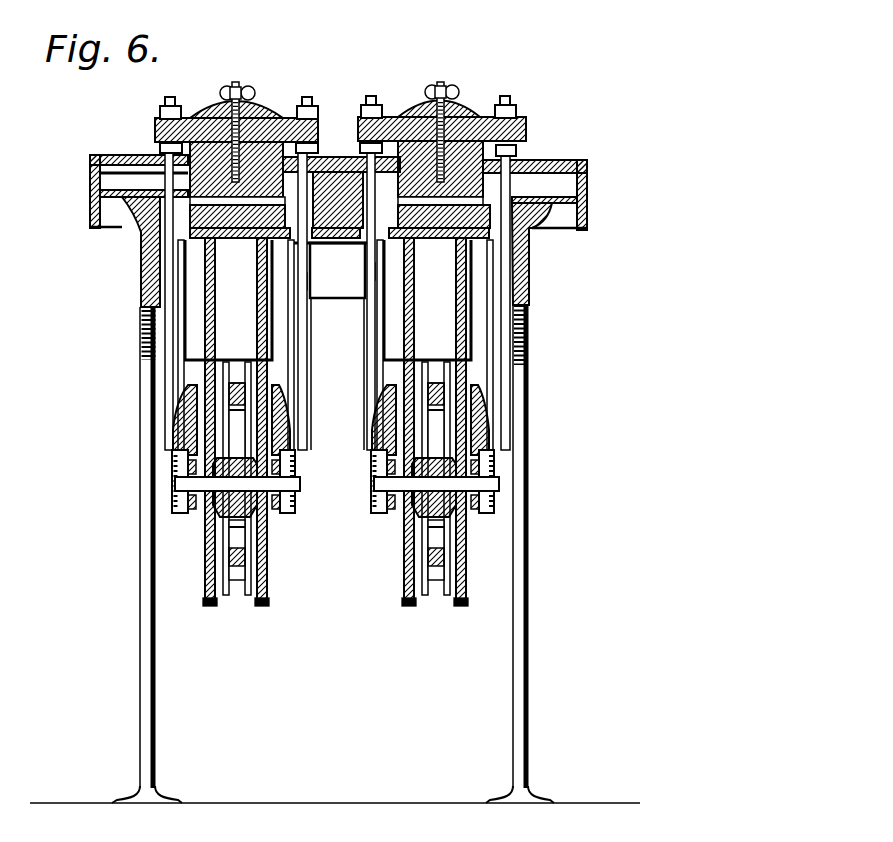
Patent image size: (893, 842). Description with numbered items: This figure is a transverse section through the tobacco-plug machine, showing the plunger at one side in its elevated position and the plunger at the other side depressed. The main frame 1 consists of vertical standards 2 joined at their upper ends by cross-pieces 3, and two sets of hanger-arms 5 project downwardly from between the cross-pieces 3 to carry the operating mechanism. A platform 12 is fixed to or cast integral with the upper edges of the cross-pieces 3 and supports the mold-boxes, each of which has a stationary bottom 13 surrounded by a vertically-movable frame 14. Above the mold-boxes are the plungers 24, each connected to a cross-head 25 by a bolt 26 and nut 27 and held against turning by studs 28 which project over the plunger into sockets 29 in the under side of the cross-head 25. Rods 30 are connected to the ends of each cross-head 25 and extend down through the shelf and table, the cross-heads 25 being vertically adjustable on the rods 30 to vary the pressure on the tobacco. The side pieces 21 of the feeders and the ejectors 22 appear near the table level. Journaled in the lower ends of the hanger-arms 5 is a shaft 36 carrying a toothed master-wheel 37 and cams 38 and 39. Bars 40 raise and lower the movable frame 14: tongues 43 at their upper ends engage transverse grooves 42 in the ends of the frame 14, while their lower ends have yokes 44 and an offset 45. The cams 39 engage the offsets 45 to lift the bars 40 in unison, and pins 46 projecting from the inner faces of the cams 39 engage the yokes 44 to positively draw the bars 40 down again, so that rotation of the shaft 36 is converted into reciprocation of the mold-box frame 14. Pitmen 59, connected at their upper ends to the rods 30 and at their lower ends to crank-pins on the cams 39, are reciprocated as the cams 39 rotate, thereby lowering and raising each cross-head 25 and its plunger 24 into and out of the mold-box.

The main frame 1 is at (125, 296).
The vertical standards 2 is at (143, 628).
The cross-pieces 3 is at (338, 346).
The hanger-arms 5 is at (257, 330).
The platform 12 is at (338, 240).
The stationary bottom 13 is at (236, 240).
The vertically-movable frame 14 is at (148, 212).
The side pieces 21 is at (100, 182).
The ejectors 22 is at (545, 232).
The plungers 24 is at (210, 122).
The cross-heads 25 is at (256, 114).
The bolt 26 is at (236, 82).
The nut 27 is at (227, 87).
The studs 28 is at (166, 108).
The sockets 29 is at (160, 146).
The rods 30 is at (318, 152).
The shaft 36 is at (262, 527).
The toothed master-wheel 37 is at (237, 543).
The cam 38 is at (178, 465).
The cams 39 is at (301, 487).
The bars 40 is at (184, 372).
The transverse grooves 42 is at (186, 208).
The tongues 43 is at (186, 221).
The yokes 44 is at (190, 473).
The offset 45 is at (182, 432).
The pins 46 is at (182, 515).
The pitmen 59 is at (160, 333).